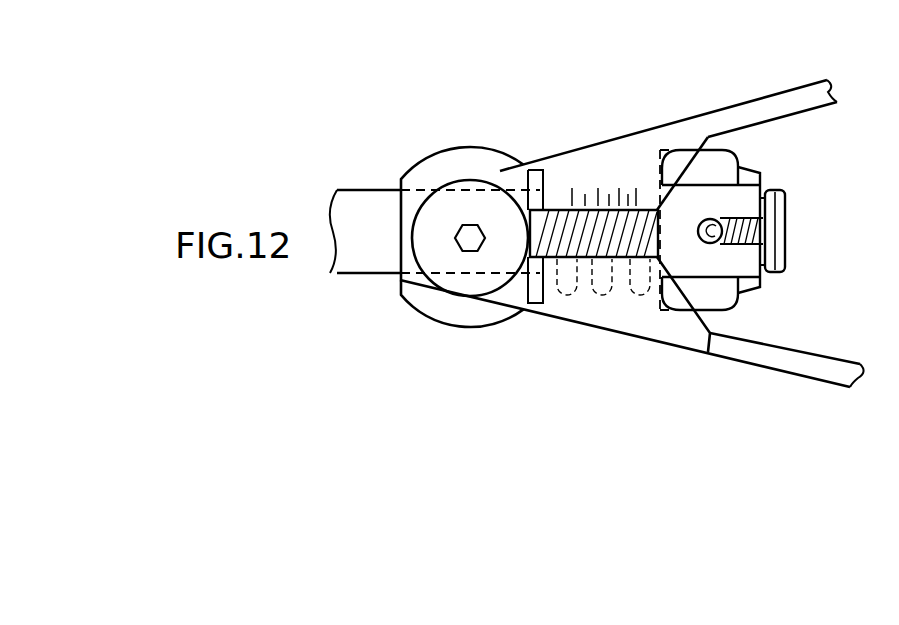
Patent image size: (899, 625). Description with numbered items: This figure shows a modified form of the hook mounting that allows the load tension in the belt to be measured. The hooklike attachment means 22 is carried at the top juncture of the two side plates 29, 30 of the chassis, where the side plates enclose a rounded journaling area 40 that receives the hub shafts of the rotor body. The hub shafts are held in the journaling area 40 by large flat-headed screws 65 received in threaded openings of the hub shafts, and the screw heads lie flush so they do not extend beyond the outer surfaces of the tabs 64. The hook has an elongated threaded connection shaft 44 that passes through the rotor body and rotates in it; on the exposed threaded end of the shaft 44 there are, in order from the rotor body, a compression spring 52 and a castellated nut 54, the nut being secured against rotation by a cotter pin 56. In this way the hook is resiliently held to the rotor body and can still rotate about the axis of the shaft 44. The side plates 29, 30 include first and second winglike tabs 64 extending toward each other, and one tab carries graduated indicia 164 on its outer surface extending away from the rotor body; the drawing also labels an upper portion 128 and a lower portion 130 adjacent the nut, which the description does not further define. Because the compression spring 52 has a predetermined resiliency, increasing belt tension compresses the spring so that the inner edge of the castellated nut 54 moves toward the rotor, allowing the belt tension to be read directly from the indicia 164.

The hooklike attachment means 22 is at (545, 148).
The side plate 29 is at (826, 372).
The side plate 30 is at (787, 97).
The journaling area 40 is at (401, 170).
The threaded connection shaft 44 is at (788, 215).
The compression spring 52 is at (571, 300).
The castellated nut 54 is at (743, 173).
The cotter pin 56 is at (717, 242).
The tabs 64 is at (631, 136).
The flat-headed screw 65 is at (440, 276).
The upper jaw portion 128 is at (698, 130).
The lower jaw portion 130 is at (632, 318).
The graduated indicia 164 is at (593, 167).